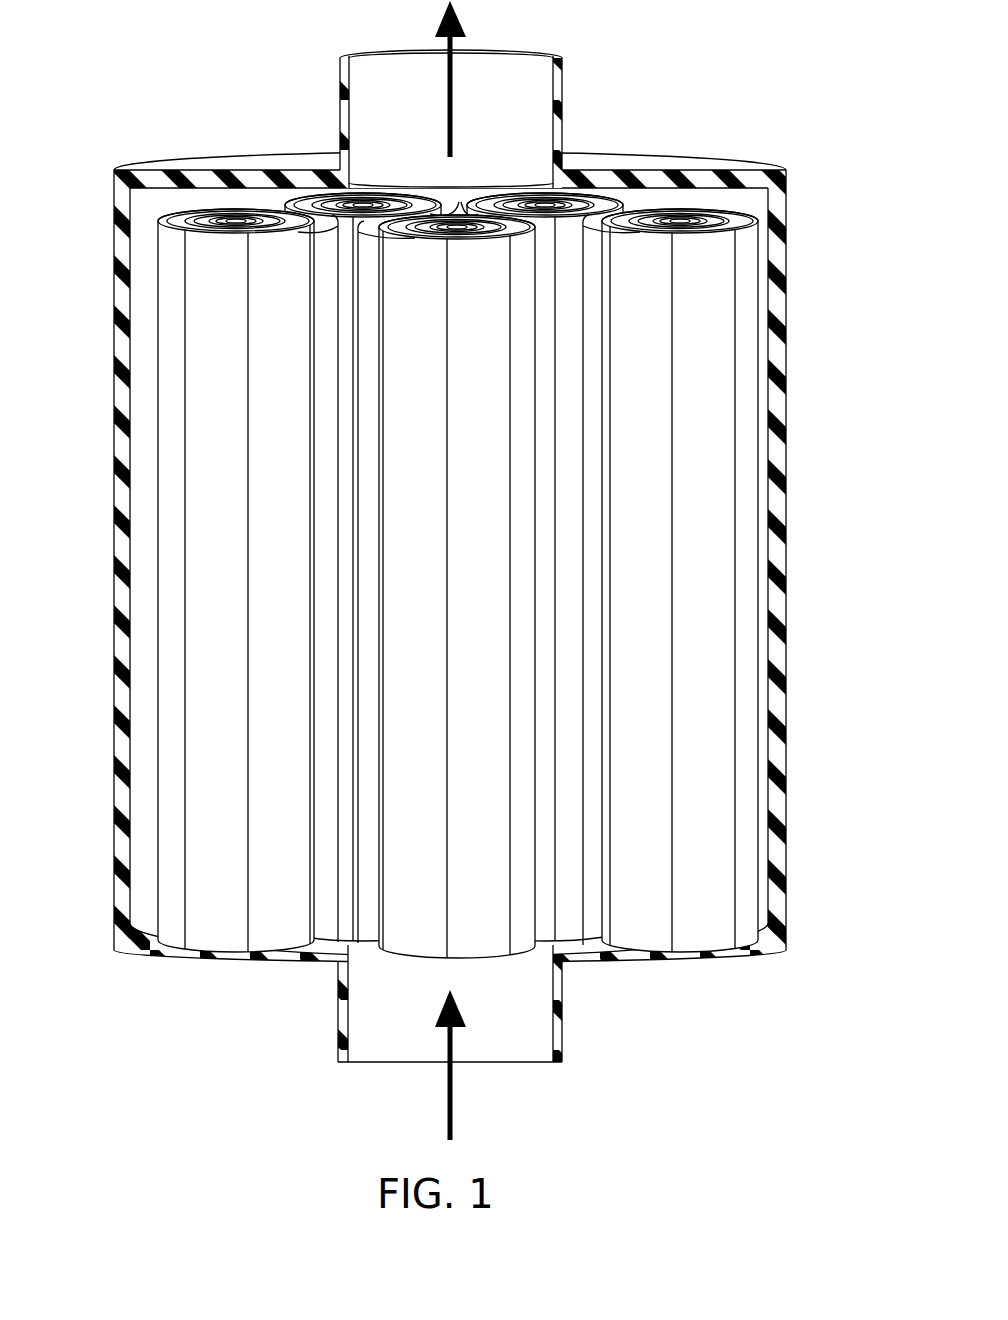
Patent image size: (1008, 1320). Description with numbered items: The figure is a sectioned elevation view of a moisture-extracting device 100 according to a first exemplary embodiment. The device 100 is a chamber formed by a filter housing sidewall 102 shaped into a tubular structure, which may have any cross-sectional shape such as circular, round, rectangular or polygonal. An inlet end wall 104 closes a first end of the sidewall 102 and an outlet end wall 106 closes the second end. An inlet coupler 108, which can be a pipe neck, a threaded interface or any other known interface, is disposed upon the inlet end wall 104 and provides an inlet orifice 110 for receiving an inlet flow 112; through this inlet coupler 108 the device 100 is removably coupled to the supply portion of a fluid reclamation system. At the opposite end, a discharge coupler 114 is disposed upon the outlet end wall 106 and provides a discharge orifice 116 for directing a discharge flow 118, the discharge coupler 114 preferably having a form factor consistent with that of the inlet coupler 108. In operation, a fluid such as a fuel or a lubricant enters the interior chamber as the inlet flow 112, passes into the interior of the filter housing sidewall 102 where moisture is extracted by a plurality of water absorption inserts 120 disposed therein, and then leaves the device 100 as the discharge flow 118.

The moisture-extracting device 100 is at (460, 571).
The filter housing sidewall 102 is at (787, 532).
The inlet end wall 104 is at (630, 960).
The outlet end wall 106 is at (628, 160).
The inlet coupler 108 is at (565, 1012).
The inlet orifice 110 is at (503, 1048).
The inlet flow 112 is at (446, 1095).
The discharge coupler 114 is at (563, 100).
The discharge orifice 116 is at (504, 78).
The discharge flow 118 is at (446, 118).
The water absorption inserts 120 is at (200, 624).